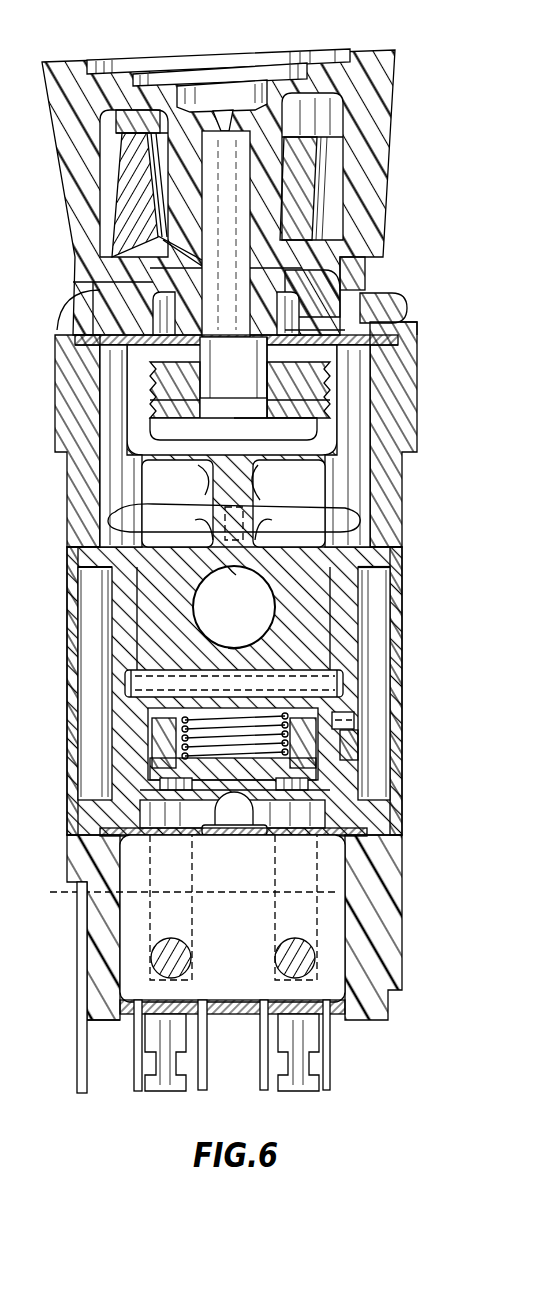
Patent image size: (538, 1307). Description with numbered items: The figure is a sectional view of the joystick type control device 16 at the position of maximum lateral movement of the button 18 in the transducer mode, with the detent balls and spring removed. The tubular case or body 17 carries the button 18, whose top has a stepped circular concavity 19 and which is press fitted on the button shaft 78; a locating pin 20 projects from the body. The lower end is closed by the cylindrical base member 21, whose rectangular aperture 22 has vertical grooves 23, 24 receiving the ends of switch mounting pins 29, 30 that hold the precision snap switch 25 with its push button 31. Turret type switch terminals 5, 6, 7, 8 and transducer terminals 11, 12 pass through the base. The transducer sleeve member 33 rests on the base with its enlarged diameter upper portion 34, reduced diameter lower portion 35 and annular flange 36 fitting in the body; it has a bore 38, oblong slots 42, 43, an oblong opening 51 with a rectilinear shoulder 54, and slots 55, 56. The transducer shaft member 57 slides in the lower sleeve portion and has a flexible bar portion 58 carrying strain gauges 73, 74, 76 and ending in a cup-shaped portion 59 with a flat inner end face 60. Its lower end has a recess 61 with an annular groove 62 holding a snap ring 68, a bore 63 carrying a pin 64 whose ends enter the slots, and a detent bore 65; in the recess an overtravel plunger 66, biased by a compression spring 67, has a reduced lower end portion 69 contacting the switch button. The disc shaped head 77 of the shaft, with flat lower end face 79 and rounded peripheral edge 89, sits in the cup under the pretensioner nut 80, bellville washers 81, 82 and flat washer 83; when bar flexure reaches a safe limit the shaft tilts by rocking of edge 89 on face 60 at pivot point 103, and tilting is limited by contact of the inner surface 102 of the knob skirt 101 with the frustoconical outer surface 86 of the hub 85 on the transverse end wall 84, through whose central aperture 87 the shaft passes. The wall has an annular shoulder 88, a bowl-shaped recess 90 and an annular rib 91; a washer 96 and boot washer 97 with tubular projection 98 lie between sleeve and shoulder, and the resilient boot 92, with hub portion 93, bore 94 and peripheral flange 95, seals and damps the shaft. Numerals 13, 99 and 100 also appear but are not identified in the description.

The switch terminal 5 is at (135, 1091).
The switch terminal 6 is at (207, 1090).
The switch terminal 7 is at (264, 1090).
The switch terminal 8 is at (330, 1090).
The transducer terminal 11 is at (157, 1093).
The transducer terminal 12 is at (312, 1093).
The mounting plate 13 is at (77, 1082).
The joystick type control device 16 is at (50, 266).
The case 17 is at (418, 323).
The button 18 is at (397, 118).
The stepped circular concavity 19 is at (272, 58).
The locating pin 20 is at (5, 376).
The base member 21 is at (375, 1020).
The aperture 22 is at (121, 1022).
The vertical groove 23 is at (440, 892).
The vertical groove 24 is at (400, 892).
The precision snap switch 25 is at (135, 932).
The switch mounting pin 29 is at (168, 940).
The switch mounting pin 30 is at (293, 940).
The push button 31 is at (253, 812).
The transducer sleeve member 33 is at (95, 555).
The enlarged diameter upper portion 34 is at (75, 432).
The reduced diameter lower portion 35 is at (345, 762).
The annular flange 36 is at (88, 815).
The bore 38 is at (150, 477).
The oblong slot 42 is at (148, 498).
The oblong slot 43 is at (327, 482).
The opening 51 is at (258, 572).
The rectilinear shoulder 54 is at (236, 648).
The oblong slot 55 is at (137, 728).
The oblong slot 56 is at (352, 726).
The transducer shaft member 57 is at (150, 612).
The flexible bar portion 58 is at (200, 483).
The cup-shaped portion 59 is at (147, 400).
The flat inner end face 60 is at (298, 455).
The cylindrical recess 61 is at (152, 740).
The annular groove 62 is at (320, 784).
The bore 63 is at (310, 668).
The pin 64 is at (335, 683).
The detent bore 65 is at (236, 572).
The overtravel plunger 66 is at (165, 760).
The compression spring 67 is at (318, 712).
The snap ring 68 is at (160, 783).
The reduced diameter lower end portion 69 is at (215, 785).
The strain gauge 73 is at (237, 506).
The strain gauge 74 is at (262, 518).
The strain gauge 76 is at (200, 518).
The disc shaped head 77 is at (215, 425).
The button shaft 78 is at (238, 232).
The flat circular lower end face 79 is at (273, 414).
The pretensioner nut 80 is at (333, 358).
The bellville spring washer 81 is at (152, 400).
The bellville spring washer 82 is at (150, 420).
The flat washer 83 is at (340, 402).
The transverse upper end wall 84 is at (388, 294).
The hub 85 is at (362, 268).
The frustoconical outer surface 86 is at (118, 190).
The central aperture 87 is at (280, 258).
The annular shoulder 88 is at (80, 338).
The rounded peripheral edge surface 89 is at (312, 436).
The bowl-shaped recess 90 is at (345, 285).
The annular rib 91 is at (345, 312).
The boot 92 is at (150, 285).
The hub portion 93 is at (188, 340).
The bore 94 is at (253, 308).
The peripheral flange 95 is at (90, 300).
The washer 96 is at (105, 355).
The boot washer 97 is at (92, 348).
The tubular projection 98 is at (273, 340).
The lever 99 is at (282, 181).
The spring strip 100 is at (258, 160).
The knob skirt 101 is at (43, 132).
The inner surface 102 is at (102, 152).
The pivot point 103 is at (143, 447).